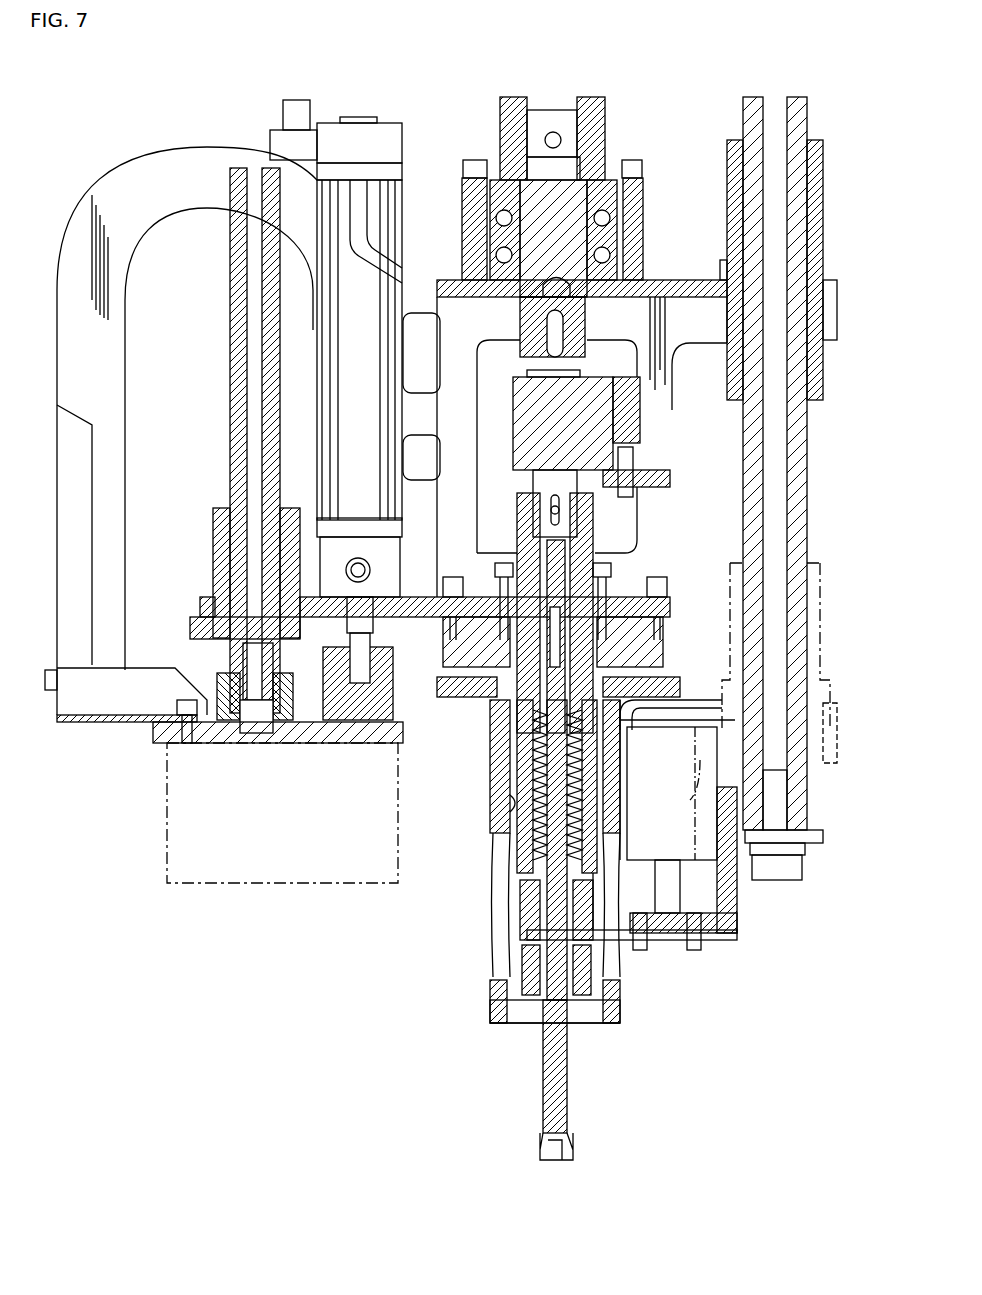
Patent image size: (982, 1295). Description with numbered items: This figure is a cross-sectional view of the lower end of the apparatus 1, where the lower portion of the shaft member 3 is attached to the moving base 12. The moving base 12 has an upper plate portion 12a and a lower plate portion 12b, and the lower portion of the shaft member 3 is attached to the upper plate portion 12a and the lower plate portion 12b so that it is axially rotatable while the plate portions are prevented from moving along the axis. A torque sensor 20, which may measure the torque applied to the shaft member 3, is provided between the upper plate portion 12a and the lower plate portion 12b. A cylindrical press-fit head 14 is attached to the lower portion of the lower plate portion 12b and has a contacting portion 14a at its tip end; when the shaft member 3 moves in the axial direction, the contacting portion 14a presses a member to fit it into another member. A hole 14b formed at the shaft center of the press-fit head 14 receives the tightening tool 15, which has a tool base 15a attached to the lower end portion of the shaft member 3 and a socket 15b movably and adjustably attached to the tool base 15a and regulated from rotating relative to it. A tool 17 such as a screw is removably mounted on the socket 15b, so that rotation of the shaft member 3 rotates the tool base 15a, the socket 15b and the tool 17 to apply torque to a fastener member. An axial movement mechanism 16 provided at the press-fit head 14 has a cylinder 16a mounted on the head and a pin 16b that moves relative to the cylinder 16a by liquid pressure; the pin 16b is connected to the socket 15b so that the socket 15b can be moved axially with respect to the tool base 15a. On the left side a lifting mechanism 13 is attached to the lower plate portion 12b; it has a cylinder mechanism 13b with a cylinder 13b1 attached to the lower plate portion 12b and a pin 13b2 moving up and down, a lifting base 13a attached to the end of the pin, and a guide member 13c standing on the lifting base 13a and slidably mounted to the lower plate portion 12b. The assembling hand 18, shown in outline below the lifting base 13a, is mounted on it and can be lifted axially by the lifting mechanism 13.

The workpiece processing device 1 is at (420, 98).
The shaft member 3 is at (585, 130).
The moving base 12 is at (675, 414).
The upper plate portion 12a is at (702, 325).
The lower plate portion 12b is at (410, 620).
The lifting mechanism 13 is at (150, 737).
The lifting base 13a is at (405, 728).
The cylinder mechanism 13b is at (316, 305).
The air cylinder 13b1 is at (355, 358).
The nut 13b2 is at (303, 745).
The guide member 13c is at (230, 400).
The press-fit head 14 is at (490, 762).
The contacting portion 14a is at (500, 1022).
The hole 14b is at (513, 806).
The tightening tool 15 is at (517, 863).
The tool base 15a is at (580, 557).
The socket 15b is at (587, 897).
The axial movement mechanism 16 is at (723, 897).
The cylinder 16a is at (700, 840).
The pin 16b is at (667, 893).
The tool 17 is at (557, 1077).
The assembling hand 18 is at (288, 875).
The torque sensor 20 is at (593, 455).